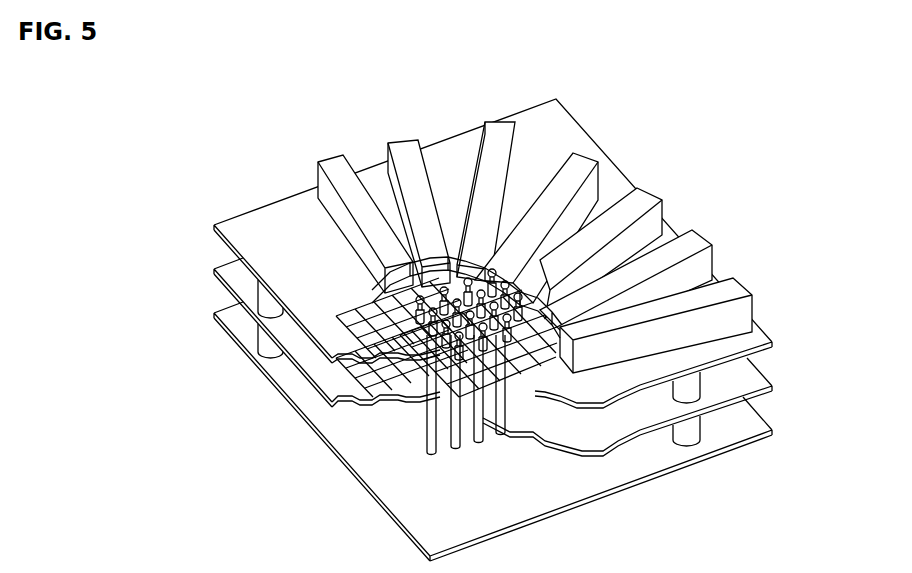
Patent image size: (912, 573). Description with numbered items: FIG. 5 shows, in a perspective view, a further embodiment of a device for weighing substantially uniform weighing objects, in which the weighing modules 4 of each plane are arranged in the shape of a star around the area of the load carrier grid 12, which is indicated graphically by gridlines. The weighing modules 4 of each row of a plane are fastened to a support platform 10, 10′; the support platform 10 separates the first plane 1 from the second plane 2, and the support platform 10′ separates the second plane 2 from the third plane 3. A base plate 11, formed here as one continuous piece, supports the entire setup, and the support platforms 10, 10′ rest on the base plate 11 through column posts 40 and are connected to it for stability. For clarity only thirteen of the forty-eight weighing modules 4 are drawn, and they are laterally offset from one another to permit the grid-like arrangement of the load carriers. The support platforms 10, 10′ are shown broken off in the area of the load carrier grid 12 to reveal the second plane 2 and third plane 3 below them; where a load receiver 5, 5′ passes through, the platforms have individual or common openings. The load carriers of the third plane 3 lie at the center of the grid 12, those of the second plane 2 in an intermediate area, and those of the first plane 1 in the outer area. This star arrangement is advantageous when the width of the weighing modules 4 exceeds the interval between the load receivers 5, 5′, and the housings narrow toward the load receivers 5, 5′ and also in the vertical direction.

The first plane 1 is at (794, 311).
The second plane 2 is at (794, 363).
The third plane 3 is at (794, 413).
The weighing module 4 is at (762, 278).
The load receiver 5 is at (415, 317).
The load receiver 5′ is at (425, 355).
The support platform 10 is at (619, 393).
The support platform 10′ is at (620, 435).
The base plate 11 is at (619, 482).
The load carrier grid 12 is at (400, 292).
The column post 40 is at (268, 345).